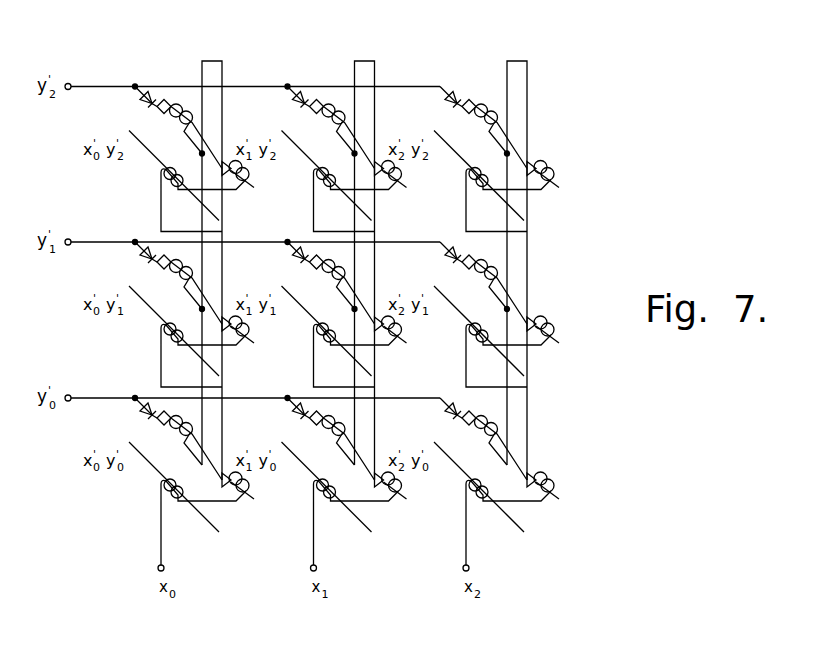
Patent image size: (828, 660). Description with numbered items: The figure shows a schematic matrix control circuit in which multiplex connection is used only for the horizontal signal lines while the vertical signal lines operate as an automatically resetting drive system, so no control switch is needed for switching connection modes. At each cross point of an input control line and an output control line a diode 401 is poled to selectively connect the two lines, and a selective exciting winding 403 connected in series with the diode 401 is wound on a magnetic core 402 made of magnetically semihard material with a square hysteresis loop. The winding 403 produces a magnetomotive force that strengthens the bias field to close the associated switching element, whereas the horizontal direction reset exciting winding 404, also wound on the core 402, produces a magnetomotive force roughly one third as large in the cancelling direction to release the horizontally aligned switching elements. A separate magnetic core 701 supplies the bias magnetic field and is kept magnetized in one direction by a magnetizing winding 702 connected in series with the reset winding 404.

The diode 401 is at (143, 104).
The magnetic core 402 is at (162, 100).
The selective exciting winding 403 is at (192, 113).
The horizontal direction reset exciting winding 404 is at (245, 176).
The magnetic core 701 is at (147, 150).
The magnetizing winding 702 is at (166, 183).